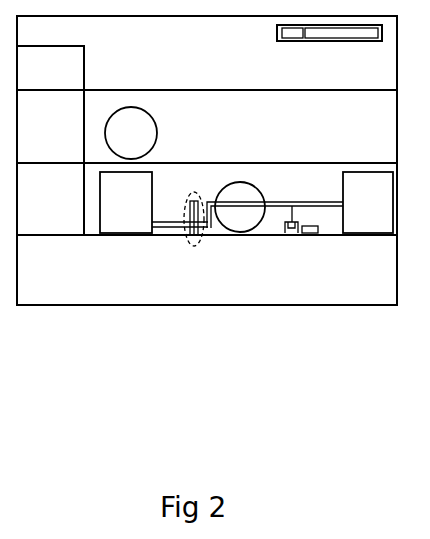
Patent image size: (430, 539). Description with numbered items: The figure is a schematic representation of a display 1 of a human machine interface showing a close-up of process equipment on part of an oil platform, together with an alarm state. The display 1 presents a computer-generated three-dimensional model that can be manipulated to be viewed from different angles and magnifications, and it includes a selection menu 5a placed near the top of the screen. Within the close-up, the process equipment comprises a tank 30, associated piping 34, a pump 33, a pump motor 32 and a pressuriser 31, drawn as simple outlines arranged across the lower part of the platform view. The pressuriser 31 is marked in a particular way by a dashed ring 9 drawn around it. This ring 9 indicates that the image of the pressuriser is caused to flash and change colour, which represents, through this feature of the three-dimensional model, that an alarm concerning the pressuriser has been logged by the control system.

The display 1 is at (57, 318).
The selection menu 5a is at (297, 41).
The dashed ring 9 is at (190, 243).
The tank 30 is at (232, 222).
The pressuriser 31 is at (185, 232).
The pump motor 32 is at (291, 233).
The pump 33 is at (308, 232).
The associated piping 34 is at (278, 207).